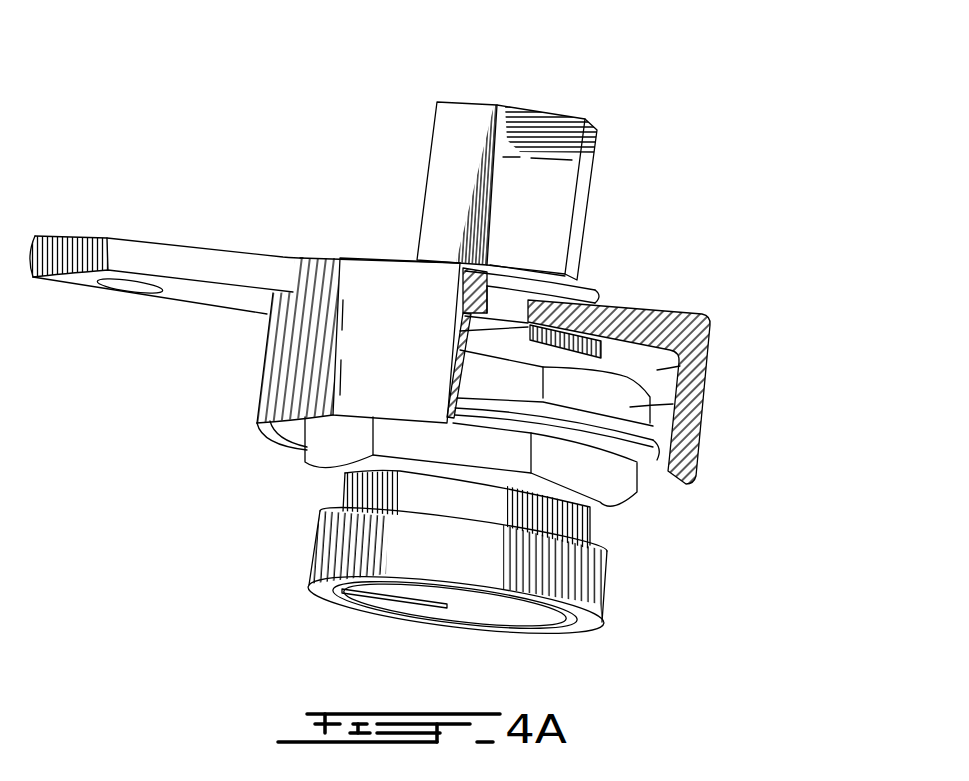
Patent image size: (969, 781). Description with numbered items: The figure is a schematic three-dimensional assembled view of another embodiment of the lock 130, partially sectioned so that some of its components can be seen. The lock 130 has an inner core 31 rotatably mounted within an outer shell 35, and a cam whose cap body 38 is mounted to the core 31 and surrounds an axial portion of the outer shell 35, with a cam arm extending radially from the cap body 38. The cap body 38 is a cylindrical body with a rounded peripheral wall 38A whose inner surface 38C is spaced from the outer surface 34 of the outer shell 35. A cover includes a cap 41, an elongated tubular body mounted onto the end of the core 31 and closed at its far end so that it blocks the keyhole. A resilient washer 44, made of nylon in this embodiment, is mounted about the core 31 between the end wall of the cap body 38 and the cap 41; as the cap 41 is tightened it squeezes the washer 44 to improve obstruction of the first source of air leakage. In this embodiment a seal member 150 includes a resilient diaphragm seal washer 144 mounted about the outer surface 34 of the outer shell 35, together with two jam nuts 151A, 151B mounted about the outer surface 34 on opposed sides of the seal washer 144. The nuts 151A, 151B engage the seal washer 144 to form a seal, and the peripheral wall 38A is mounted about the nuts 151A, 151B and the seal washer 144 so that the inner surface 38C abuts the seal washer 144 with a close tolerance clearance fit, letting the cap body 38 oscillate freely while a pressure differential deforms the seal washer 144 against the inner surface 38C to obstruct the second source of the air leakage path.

The lock 130 is at (421, 349).
The cap 41 is at (557, 135).
The cap body 38 is at (342, 255).
The peripheral wall 38A is at (295, 355).
The inner surface 38C is at (702, 366).
The resilient washer 44 is at (573, 293).
The nut 151B is at (633, 408).
The seal washer 144 is at (653, 442).
The seal member 150 is at (672, 477).
The nut 151A is at (595, 470).
The outer surface 34 is at (373, 493).
The outer shell 35 is at (530, 598).
The inner core 31 is at (513, 617).